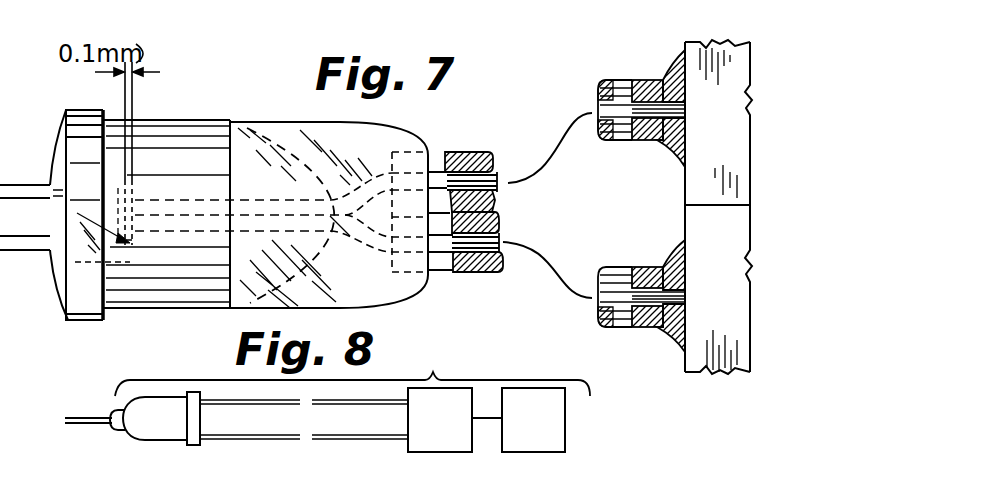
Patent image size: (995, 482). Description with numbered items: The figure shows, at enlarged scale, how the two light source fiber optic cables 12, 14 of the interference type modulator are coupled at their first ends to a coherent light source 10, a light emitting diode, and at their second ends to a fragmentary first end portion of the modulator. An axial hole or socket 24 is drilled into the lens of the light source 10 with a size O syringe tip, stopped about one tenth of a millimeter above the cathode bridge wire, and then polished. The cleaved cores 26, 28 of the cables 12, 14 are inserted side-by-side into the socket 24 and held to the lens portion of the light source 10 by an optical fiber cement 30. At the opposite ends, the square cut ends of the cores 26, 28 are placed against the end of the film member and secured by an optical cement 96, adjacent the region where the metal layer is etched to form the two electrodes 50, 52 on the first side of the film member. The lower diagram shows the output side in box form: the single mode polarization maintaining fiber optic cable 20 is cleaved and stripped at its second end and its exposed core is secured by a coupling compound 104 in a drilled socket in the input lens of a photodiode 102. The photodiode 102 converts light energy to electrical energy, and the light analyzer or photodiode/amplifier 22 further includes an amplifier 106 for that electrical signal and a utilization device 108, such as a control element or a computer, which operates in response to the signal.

In FIG. 7, the coherent light source 10 is at (137, 303).
In FIG. 7, the first light source fiber optic cable 12 is at (467, 152).
In FIG. 7, the second light source fiber optic cable 14 is at (463, 273).
In FIG. 8, the polarization maintaining fiber optic cable 20 is at (80, 425).
In FIG. 8, the photodiode/amplifier 22 is at (352, 366).
In FIG. 7, the axial hole or socket 24 is at (280, 200).
In FIG. 7, the core of first fiber optic cable 26 is at (182, 210).
In FIG. 7, the core of second fiber optic cable 28 is at (193, 222).
In FIG. 7, the optical fiber cement 30 is at (362, 292).
In FIG. 7, the first electrode 50 is at (722, 127).
In FIG. 7, the second electrode 52 is at (722, 297).
In FIG. 7, the optical cement 96 is at (677, 143).
In FIG. 8, the photodiode 102 is at (148, 427).
In FIG. 8, the coupling compound 104 is at (113, 412).
In FIG. 8, the amplifier 106 is at (468, 433).
In FIG. 8, the utilization device 108 is at (562, 433).